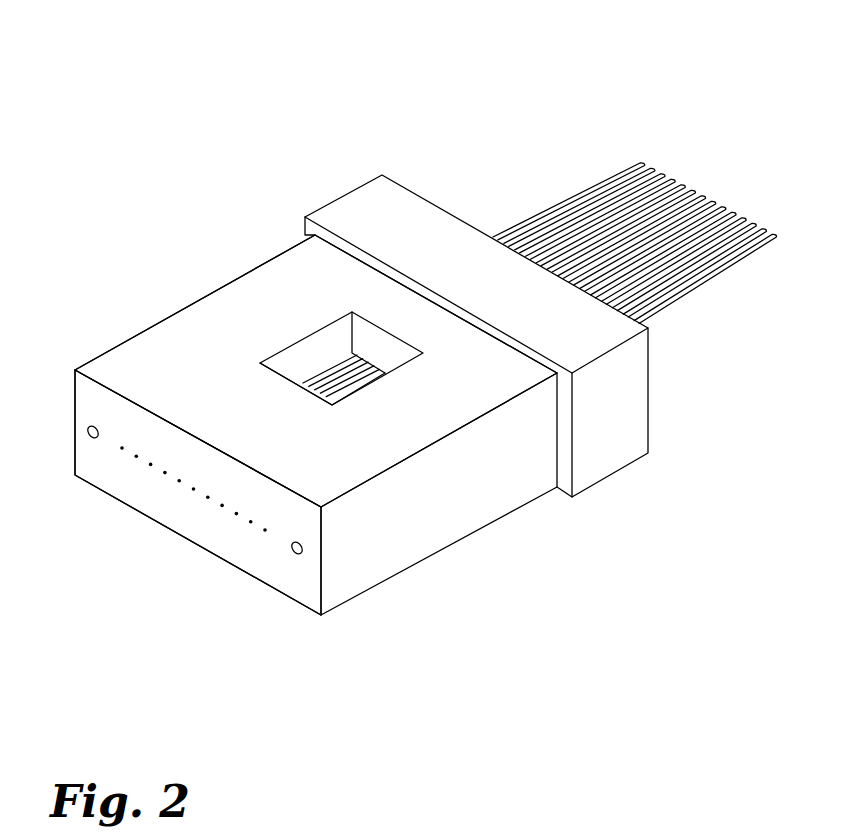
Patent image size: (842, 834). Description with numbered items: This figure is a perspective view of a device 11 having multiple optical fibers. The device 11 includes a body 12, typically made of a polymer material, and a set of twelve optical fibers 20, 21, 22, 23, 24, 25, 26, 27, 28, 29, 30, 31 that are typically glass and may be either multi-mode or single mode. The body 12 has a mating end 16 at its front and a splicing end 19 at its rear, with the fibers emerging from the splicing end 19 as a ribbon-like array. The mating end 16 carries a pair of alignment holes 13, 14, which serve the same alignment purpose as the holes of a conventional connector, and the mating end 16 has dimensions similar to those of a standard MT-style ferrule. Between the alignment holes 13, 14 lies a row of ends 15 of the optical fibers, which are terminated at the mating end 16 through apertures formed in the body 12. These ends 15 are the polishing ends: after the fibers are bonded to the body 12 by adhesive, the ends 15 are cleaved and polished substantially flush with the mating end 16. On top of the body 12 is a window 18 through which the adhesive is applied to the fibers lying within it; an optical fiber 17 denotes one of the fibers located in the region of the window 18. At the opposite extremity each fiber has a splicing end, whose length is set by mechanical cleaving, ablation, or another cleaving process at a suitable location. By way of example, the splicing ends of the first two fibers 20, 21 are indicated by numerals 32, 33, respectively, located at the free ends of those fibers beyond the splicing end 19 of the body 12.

The device 11 is at (228, 310).
The body 12 is at (157, 323).
The alignment hole 13 is at (88, 439).
The alignment hole 14 is at (291, 556).
The ends of the optical fibers 15 is at (121, 452).
The mating end 16 is at (237, 553).
The optical fiber 17 is at (332, 362).
The window 18 is at (298, 360).
The splicing end 19 is at (413, 192).
The optical fiber 20 is at (639, 162).
The optical fiber 21 is at (660, 173).
The optical fiber 22 is at (680, 184).
The optical fiber 23 is at (690, 189).
The optical fiber 24 is at (700, 195).
The optical fiber 25 is at (710, 200).
The optical fiber 26 is at (720, 206).
The optical fiber 27 is at (731, 211).
The optical fiber 28 is at (741, 217).
The optical fiber 29 is at (752, 222).
The optical fiber 30 is at (762, 228).
The optical fiber 31 is at (773, 233).
The splicing end 32 is at (650, 168).
The splicing end 33 is at (670, 178).